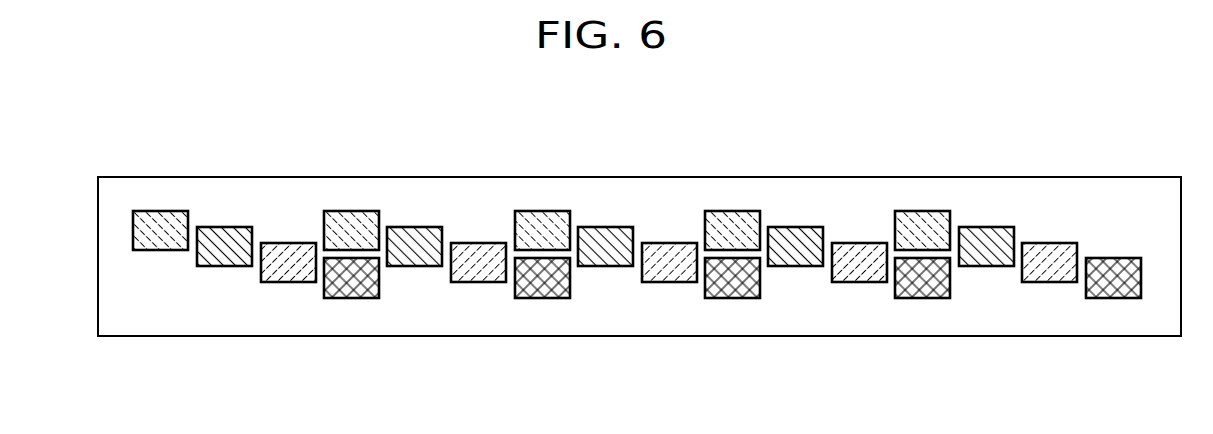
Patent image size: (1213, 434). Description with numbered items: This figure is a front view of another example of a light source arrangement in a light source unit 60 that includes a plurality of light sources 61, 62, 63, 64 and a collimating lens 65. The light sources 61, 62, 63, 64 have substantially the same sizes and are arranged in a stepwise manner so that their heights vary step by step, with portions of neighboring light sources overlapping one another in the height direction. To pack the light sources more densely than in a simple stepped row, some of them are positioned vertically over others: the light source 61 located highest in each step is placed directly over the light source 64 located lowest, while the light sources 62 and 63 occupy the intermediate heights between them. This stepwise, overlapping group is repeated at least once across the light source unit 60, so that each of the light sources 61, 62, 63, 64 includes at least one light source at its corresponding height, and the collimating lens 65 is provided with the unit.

The light source unit 60 is at (126, 157).
The light source 61 is at (352, 222).
The light source 62 is at (415, 237).
The light source 63 is at (282, 275).
The light source 64 is at (350, 290).
The collimating lens 65 is at (628, 318).